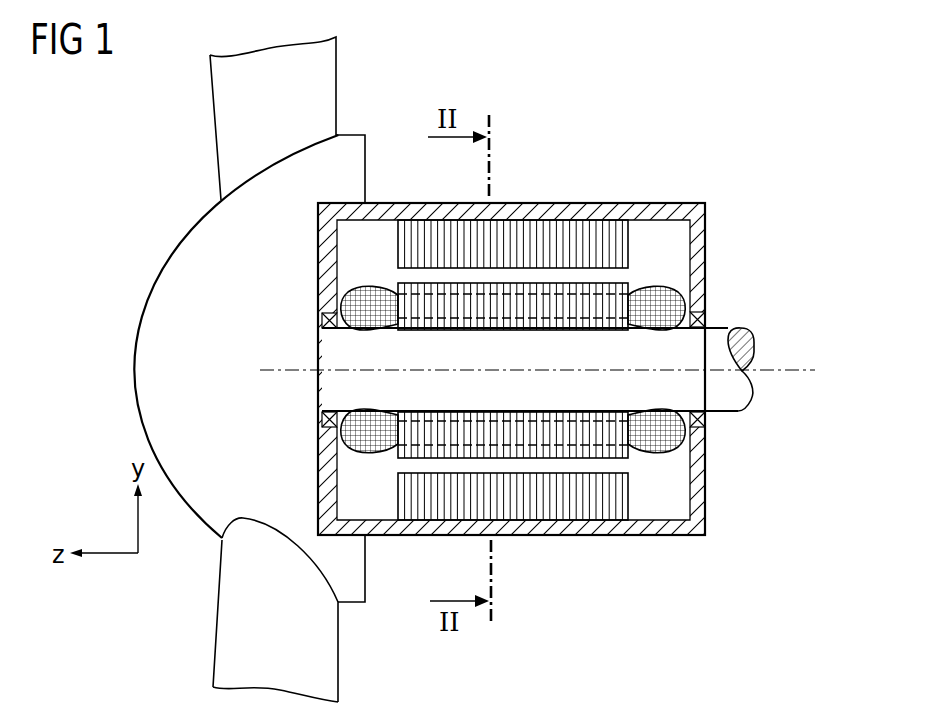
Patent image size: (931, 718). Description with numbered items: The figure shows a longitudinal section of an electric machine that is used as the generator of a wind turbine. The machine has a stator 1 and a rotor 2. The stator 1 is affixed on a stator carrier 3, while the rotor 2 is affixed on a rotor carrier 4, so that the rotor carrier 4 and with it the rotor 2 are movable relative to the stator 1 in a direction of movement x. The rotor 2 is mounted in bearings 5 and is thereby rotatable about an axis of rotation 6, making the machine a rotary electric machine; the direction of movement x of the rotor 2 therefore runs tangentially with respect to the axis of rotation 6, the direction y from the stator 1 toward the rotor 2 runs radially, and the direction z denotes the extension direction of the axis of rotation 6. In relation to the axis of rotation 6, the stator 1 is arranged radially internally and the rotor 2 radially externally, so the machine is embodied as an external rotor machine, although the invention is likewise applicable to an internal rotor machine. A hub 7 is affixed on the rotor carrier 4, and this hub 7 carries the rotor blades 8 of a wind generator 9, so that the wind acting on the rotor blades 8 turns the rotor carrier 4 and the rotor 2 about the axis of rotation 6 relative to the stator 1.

The stator 1 is at (618, 450).
The rotor 2 is at (577, 224).
The stator carrier 3 is at (745, 398).
The rotor carrier 4 is at (650, 210).
The bearings 5 is at (322, 320).
The axis of rotation 6 is at (803, 370).
The hub 7 is at (157, 281).
The rotor blades 8 is at (332, 80).
The wind generator 9 is at (226, 369).